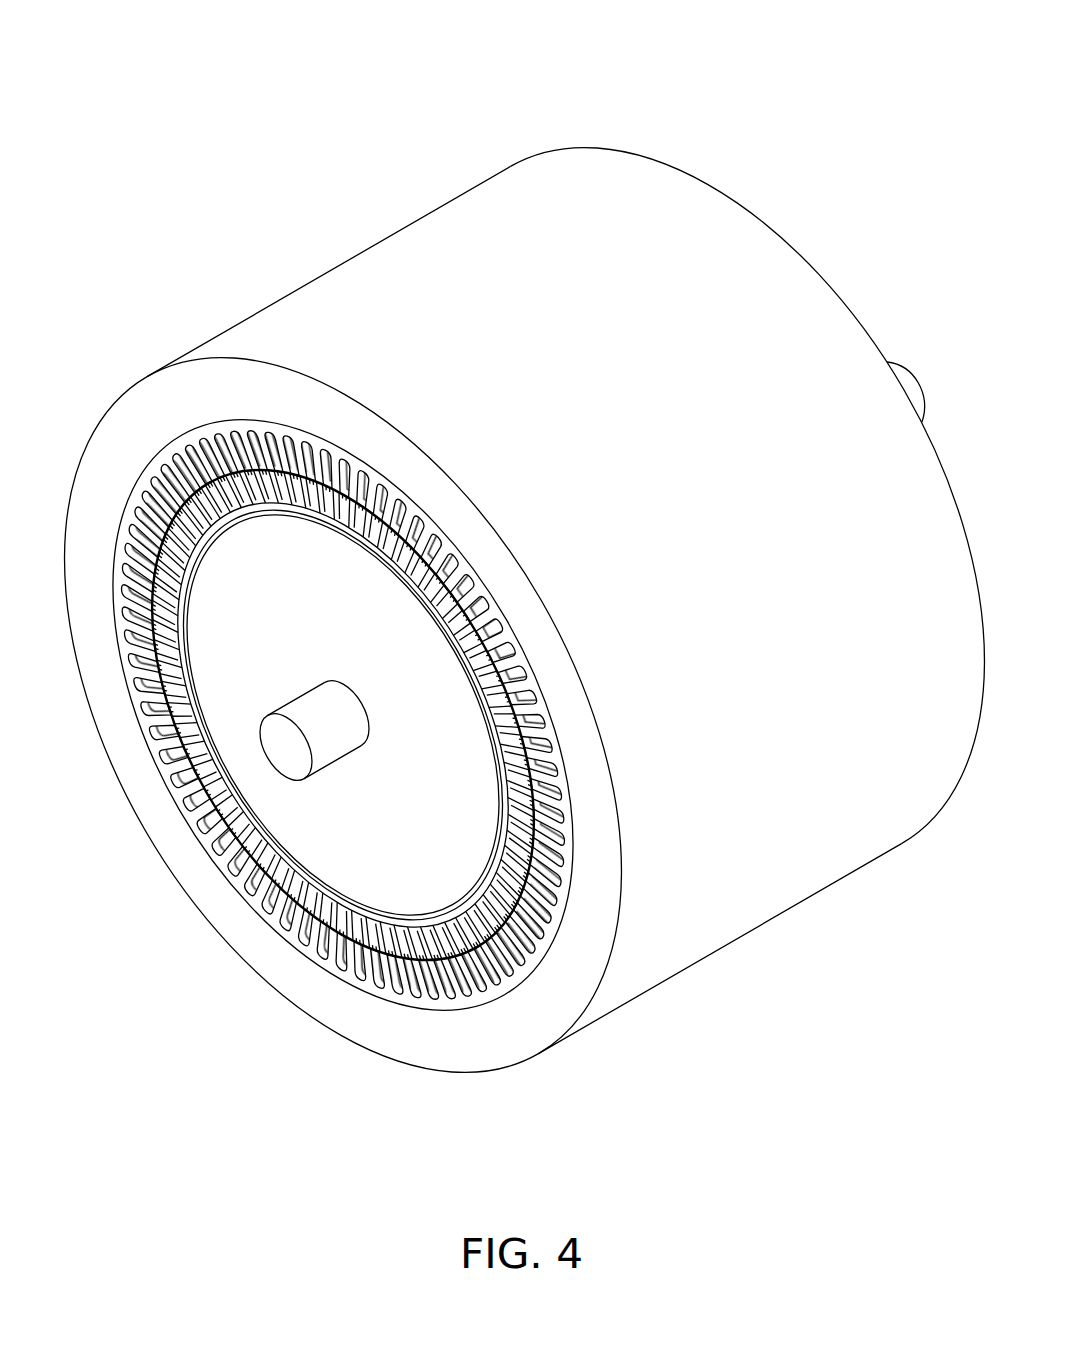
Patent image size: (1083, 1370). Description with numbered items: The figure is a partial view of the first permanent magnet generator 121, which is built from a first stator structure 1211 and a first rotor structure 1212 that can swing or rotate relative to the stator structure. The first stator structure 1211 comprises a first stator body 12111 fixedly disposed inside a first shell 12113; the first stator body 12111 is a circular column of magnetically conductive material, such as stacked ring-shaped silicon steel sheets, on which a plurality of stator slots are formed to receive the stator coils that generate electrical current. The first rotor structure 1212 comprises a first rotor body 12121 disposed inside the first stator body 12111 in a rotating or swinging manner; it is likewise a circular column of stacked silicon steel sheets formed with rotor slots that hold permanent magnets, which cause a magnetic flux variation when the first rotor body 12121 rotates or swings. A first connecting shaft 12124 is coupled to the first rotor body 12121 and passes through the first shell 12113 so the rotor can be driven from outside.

The first permanent magnet generator 121 is at (836, 83).
The first stator structure 1211 is at (558, 1132).
The first stator body 12111 is at (430, 1003).
The first shell 12113 is at (483, 1040).
The first rotor structure 1212 is at (365, 1132).
The first rotor body 12121 is at (343, 927).
The first connecting shaft 12124 is at (285, 750).